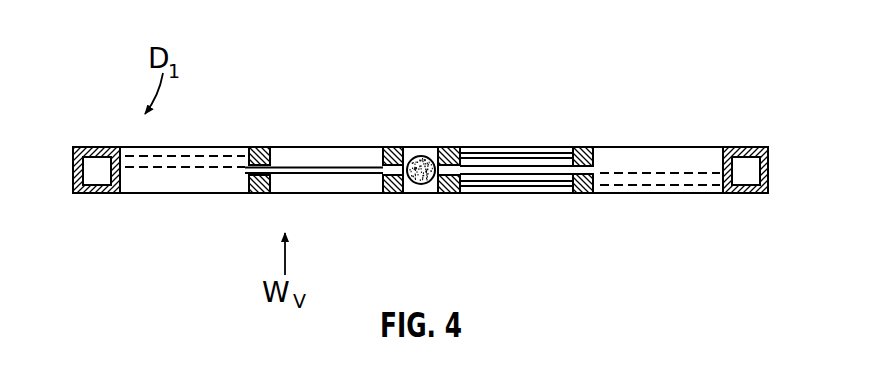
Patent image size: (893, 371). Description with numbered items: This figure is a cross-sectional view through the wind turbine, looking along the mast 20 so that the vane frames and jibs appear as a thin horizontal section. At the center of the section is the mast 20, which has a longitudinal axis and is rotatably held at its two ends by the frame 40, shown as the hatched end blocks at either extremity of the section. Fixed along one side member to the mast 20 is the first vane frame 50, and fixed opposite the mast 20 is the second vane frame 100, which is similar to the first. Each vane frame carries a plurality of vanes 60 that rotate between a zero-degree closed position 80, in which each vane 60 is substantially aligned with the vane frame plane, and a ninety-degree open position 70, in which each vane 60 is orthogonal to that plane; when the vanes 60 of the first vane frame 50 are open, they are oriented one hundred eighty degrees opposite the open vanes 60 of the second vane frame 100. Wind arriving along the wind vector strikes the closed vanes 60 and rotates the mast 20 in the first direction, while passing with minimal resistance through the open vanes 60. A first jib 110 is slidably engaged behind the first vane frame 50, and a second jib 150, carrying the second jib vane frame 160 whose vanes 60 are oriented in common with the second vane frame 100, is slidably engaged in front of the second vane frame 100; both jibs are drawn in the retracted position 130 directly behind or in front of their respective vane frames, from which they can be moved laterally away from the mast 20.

The mast 20 is at (422, 156).
The frame 40 is at (100, 148).
The first vane frame 50 is at (267, 193).
The vanes 60 is at (409, 171).
The open position 70 is at (303, 160).
The closed position 80 is at (488, 153).
The second vane frame 100 is at (583, 148).
The first jib 110 is at (260, 148).
The retracted position 130 is at (138, 231).
The second jib 150 is at (606, 218).
The second jib vane frame 160 is at (583, 193).